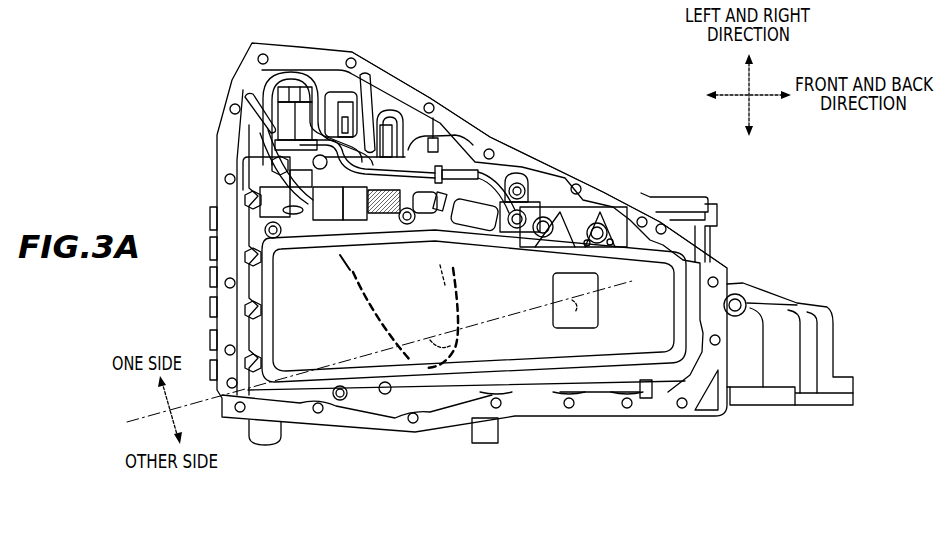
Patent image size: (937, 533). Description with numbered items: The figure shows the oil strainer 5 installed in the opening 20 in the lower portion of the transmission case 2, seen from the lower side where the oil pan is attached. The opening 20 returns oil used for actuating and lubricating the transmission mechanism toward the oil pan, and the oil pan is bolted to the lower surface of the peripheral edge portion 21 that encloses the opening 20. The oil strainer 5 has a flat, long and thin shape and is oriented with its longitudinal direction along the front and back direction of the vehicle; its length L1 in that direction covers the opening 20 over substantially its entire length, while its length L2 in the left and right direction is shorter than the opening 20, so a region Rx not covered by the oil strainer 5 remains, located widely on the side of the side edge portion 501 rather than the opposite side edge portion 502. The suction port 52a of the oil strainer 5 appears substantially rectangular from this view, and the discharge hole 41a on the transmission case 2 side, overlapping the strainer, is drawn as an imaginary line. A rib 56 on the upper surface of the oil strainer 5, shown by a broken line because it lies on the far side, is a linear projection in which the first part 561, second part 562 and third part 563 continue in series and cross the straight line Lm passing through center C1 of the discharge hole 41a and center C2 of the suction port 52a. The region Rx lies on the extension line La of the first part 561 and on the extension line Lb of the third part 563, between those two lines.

The transmission case 2 is at (753, 283).
The oil strainer 5 is at (638, 382).
The opening 20 is at (540, 193).
The peripheral edge portion 21 is at (480, 138).
The discharge hole 41a is at (427, 330).
The side edge portion 501 is at (597, 213).
The side edge portion 502 is at (602, 405).
The suction port 52a is at (593, 317).
The rib 56 is at (380, 317).
The first part 561 is at (463, 285).
The second part 562 is at (452, 387).
The third part 563 is at (348, 285).
The center of the discharge hole C1 is at (453, 352).
The center of the suction port C2 is at (577, 307).
The length of the oil strainer in the front and back direction L1 is at (703, 365).
The length of the oil strainer in the left and right direction L2 is at (640, 385).
The extension line of the first part La is at (438, 130).
The extension line of the third part Lb is at (337, 253).
The straight line Lm is at (393, 345).
The region not covered by the oil strainer Rx is at (382, 100).